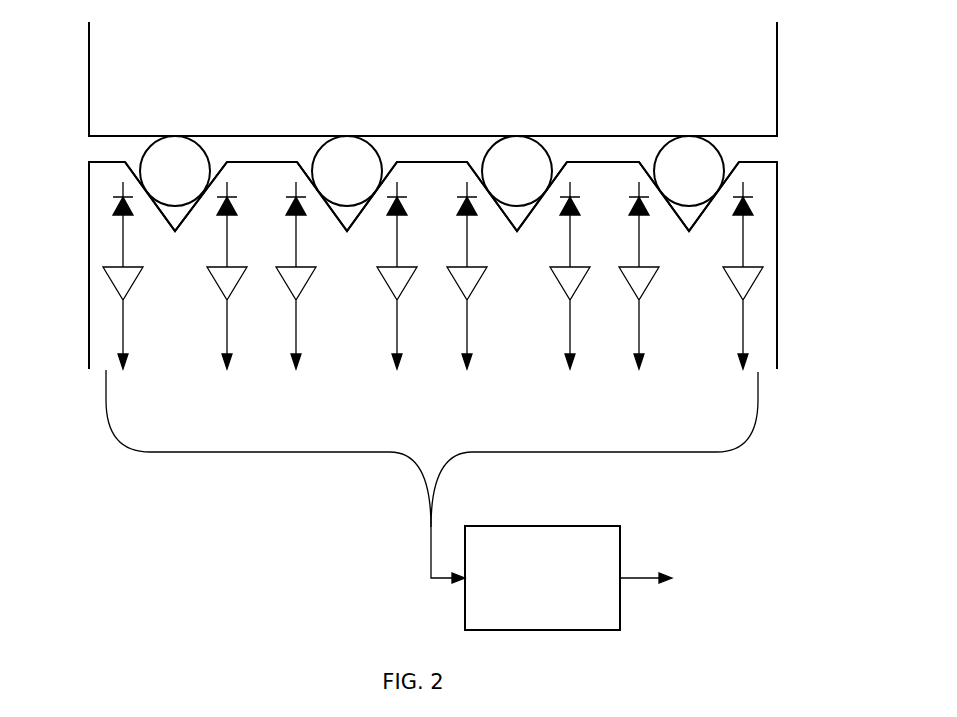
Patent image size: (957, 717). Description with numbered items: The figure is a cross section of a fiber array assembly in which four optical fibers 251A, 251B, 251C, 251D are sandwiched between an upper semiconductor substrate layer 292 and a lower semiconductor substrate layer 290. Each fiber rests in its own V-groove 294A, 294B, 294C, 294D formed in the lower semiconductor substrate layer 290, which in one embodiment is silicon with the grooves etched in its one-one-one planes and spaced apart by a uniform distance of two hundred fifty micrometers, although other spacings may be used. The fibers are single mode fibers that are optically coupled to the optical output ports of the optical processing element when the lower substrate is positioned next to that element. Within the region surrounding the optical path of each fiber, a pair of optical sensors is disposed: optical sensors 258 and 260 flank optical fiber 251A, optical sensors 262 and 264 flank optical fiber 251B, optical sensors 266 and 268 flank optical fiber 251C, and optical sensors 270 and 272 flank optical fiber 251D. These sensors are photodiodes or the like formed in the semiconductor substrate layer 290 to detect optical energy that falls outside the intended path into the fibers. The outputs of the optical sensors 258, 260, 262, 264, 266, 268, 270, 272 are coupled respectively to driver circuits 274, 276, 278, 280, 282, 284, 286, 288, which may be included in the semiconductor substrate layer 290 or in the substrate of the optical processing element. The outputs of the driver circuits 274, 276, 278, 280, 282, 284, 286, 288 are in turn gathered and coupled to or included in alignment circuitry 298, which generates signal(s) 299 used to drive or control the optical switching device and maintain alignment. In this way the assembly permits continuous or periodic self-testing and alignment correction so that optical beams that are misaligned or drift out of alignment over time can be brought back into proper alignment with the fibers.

The optical fiber 251A is at (175, 140).
The optical fiber 251B is at (347, 140).
The optical fiber 251C is at (517, 140).
The optical fiber 251D is at (691, 140).
The optical sensor 258 is at (118, 213).
The optical sensor 260 is at (219, 212).
The optical sensor 262 is at (290, 212).
The optical sensor 264 is at (392, 215).
The optical sensor 266 is at (460, 215).
The optical sensor 268 is at (565, 215).
The optical sensor 270 is at (633, 215).
The optical sensor 272 is at (737, 215).
The driver circuit 274 is at (105, 270).
The driver circuit 276 is at (218, 282).
The driver circuit 278 is at (288, 282).
The driver circuit 280 is at (389, 285).
The driver circuit 282 is at (457, 285).
The driver circuit 284 is at (557, 285).
The driver circuit 286 is at (637, 285).
The driver circuit 288 is at (735, 285).
The semiconductor substrate layer 290 is at (97, 342).
The semiconductor substrate layer 292 is at (91, 66).
The V-groove 294A is at (175, 213).
The V-groove 294B is at (345, 213).
The V-groove 294C is at (517, 213).
The V-groove 294D is at (690, 213).
The alignment circuitry 298 is at (538, 526).
The signal(s) 299 is at (630, 576).